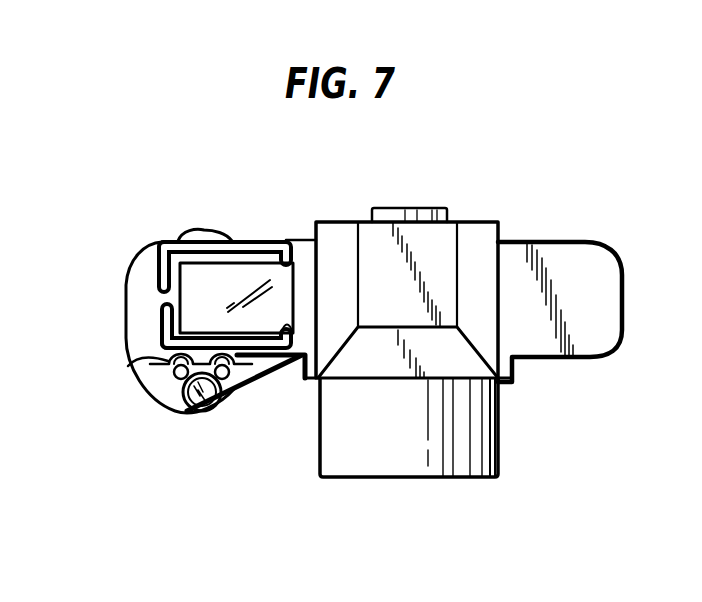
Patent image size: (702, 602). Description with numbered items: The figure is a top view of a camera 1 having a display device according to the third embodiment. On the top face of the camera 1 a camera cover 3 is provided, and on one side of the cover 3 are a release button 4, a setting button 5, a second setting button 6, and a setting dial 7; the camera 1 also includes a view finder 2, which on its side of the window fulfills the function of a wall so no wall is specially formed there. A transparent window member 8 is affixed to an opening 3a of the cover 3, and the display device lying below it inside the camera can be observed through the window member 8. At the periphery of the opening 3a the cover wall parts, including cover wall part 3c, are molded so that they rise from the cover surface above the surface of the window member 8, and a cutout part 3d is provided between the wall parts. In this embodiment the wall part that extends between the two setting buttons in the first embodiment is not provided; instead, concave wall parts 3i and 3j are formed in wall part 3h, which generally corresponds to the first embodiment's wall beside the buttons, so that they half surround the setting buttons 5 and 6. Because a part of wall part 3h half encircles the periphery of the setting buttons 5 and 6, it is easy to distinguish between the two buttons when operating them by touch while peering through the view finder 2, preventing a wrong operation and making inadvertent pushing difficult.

The camera 1 is at (110, 335).
The view finder 2 is at (331, 237).
The camera cover 3 is at (140, 262).
The opening 3a is at (289, 360).
The cover wall part 3c is at (253, 244).
The cutout part 3d is at (153, 287).
The wall part 3h is at (198, 358).
The concave wall part 3i is at (127, 359).
The concave wall part 3j is at (250, 388).
The release button 4 is at (185, 414).
The setting button 5 is at (140, 372).
The setting button 6 is at (205, 414).
The setting dial 7 is at (197, 231).
The transparent window member 8 is at (285, 266).